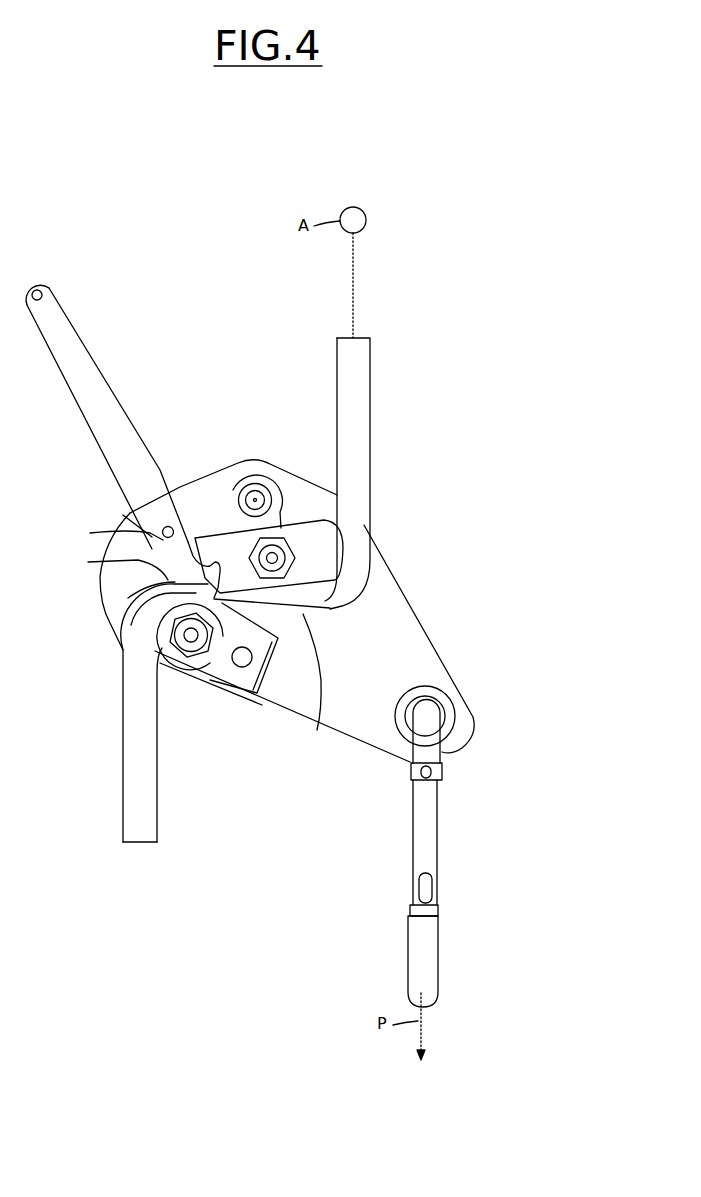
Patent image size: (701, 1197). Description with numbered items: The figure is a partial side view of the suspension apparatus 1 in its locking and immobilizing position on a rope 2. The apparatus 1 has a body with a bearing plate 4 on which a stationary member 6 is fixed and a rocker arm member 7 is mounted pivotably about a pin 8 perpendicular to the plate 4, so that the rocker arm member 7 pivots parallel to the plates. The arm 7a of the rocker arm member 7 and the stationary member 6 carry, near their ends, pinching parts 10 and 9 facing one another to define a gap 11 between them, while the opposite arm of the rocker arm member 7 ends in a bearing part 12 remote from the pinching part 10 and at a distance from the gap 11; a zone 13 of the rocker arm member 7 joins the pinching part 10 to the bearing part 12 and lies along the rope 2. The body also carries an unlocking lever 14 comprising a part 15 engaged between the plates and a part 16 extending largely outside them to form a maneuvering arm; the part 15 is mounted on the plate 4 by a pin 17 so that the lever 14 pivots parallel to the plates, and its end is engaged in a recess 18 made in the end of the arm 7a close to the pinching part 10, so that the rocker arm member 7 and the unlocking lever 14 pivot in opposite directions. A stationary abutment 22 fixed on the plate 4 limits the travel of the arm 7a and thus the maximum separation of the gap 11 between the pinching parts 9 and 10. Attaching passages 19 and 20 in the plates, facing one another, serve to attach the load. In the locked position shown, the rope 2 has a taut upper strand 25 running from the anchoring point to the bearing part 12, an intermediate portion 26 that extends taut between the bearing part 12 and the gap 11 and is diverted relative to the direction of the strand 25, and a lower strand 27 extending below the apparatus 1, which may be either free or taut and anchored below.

The suspension apparatus 1 is at (96, 504).
The rope 2 is at (336, 386).
The bearing plate 4 is at (356, 735).
The stationary member 6 is at (195, 652).
The rocker arm member 7 is at (306, 517).
The arm 7a is at (214, 526).
The pin 8 is at (256, 483).
The pinching part 9 is at (216, 606).
The pinching part 10 is at (258, 693).
The gap 11 is at (212, 683).
The bearing part 12 is at (311, 660).
The zone 13 is at (273, 620).
The unlocking lever 14 is at (90, 424).
The part 15 is at (120, 561).
The part 16 is at (68, 375).
The pin 17 is at (150, 533).
The recess 18 is at (185, 492).
The attaching passage 19 is at (449, 700).
The attaching passage 20 is at (457, 724).
The stationary abutment 22 is at (236, 560).
The taut upper strand 25 is at (371, 408).
The intermediate portion 26 is at (335, 611).
The lower strand 27 is at (130, 798).